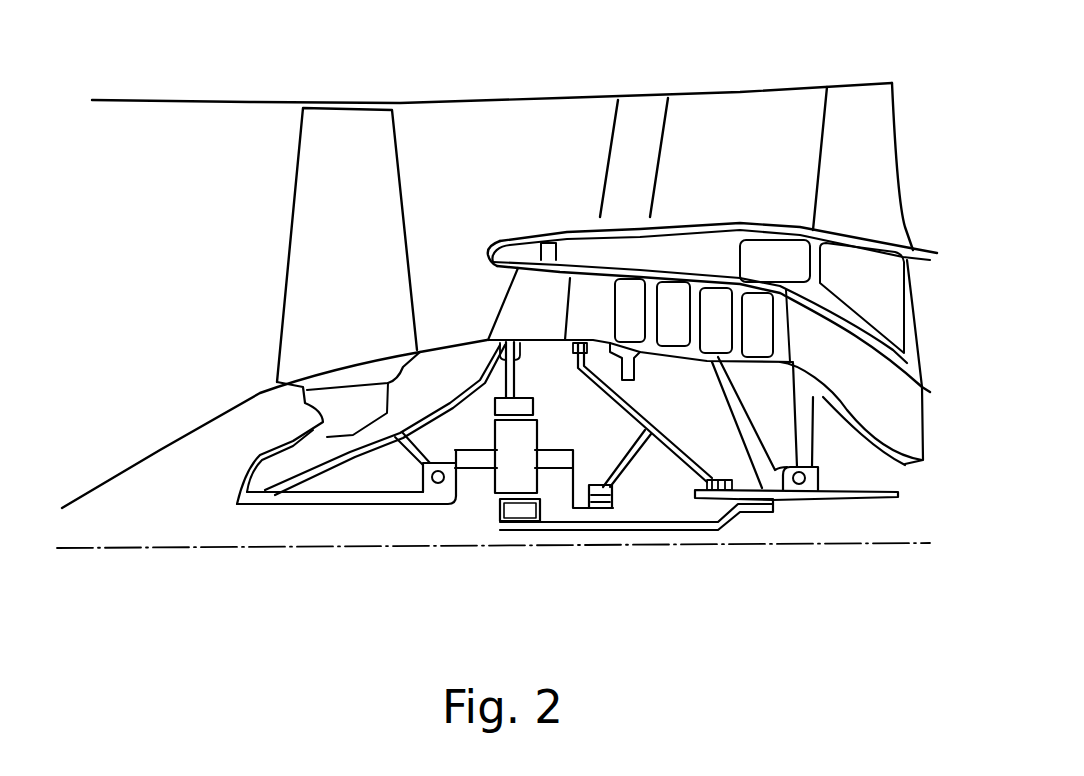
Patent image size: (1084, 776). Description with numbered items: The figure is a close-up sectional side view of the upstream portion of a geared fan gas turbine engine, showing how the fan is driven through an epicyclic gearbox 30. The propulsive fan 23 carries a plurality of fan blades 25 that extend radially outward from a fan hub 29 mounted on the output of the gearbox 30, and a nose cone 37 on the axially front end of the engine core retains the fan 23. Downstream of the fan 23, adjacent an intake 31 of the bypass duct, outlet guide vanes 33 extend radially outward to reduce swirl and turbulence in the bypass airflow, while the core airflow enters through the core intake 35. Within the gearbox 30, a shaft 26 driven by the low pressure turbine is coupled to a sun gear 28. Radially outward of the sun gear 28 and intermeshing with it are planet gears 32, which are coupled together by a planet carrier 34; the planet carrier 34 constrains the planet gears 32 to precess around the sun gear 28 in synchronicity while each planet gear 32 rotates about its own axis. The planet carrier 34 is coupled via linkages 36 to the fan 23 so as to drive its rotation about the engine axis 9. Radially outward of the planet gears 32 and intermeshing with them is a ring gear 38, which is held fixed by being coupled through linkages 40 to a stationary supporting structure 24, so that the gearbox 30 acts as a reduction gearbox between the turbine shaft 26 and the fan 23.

The principal rotational axis 9 is at (237, 548).
The propulsive fan 23 is at (298, 245).
The stationary supporting structure 24 is at (522, 325).
The fan blades 25 is at (307, 213).
The shaft 26 is at (662, 525).
The sun gear 28 is at (517, 507).
The fan hub 29 is at (300, 412).
The epicyclic gearbox 30 is at (467, 478).
The intake of the bypass duct 31 is at (512, 163).
The planet gears 32 is at (503, 477).
The outlet guide vanes 33 is at (633, 163).
The planet carrier 34 is at (558, 480).
The core intake 35 is at (493, 277).
The linkages 36 is at (455, 497).
The nose cone 37 is at (163, 483).
The ring gear 38 is at (495, 407).
The linkages 40 is at (517, 383).